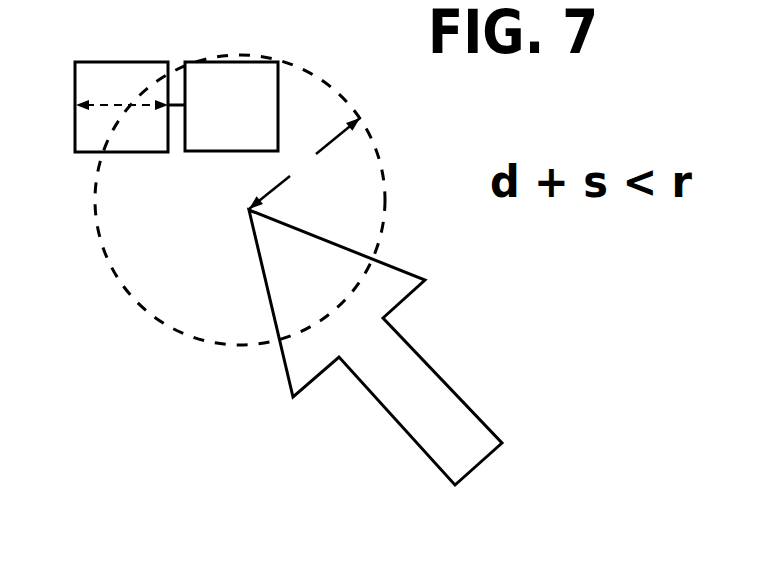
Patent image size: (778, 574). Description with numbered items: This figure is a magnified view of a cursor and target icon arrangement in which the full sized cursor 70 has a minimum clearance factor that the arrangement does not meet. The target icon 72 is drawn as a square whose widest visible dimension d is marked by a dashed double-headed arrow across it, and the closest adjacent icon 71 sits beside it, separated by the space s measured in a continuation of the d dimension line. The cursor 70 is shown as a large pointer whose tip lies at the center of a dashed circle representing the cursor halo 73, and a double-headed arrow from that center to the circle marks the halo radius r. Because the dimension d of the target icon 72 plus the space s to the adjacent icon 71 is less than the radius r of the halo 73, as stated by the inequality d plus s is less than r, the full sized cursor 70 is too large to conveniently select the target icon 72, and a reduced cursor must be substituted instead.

The cursor 70 is at (388, 282).
The adjacent icon 71 is at (242, 85).
The target icon 72 is at (93, 77).
The cursor halo 73 is at (376, 155).
The widest visible dimension of the approached icon d is at (113, 103).
The space between the approached icon and the closest adjacent icon s is at (173, 106).
The radius of the cursor halo r is at (304, 163).